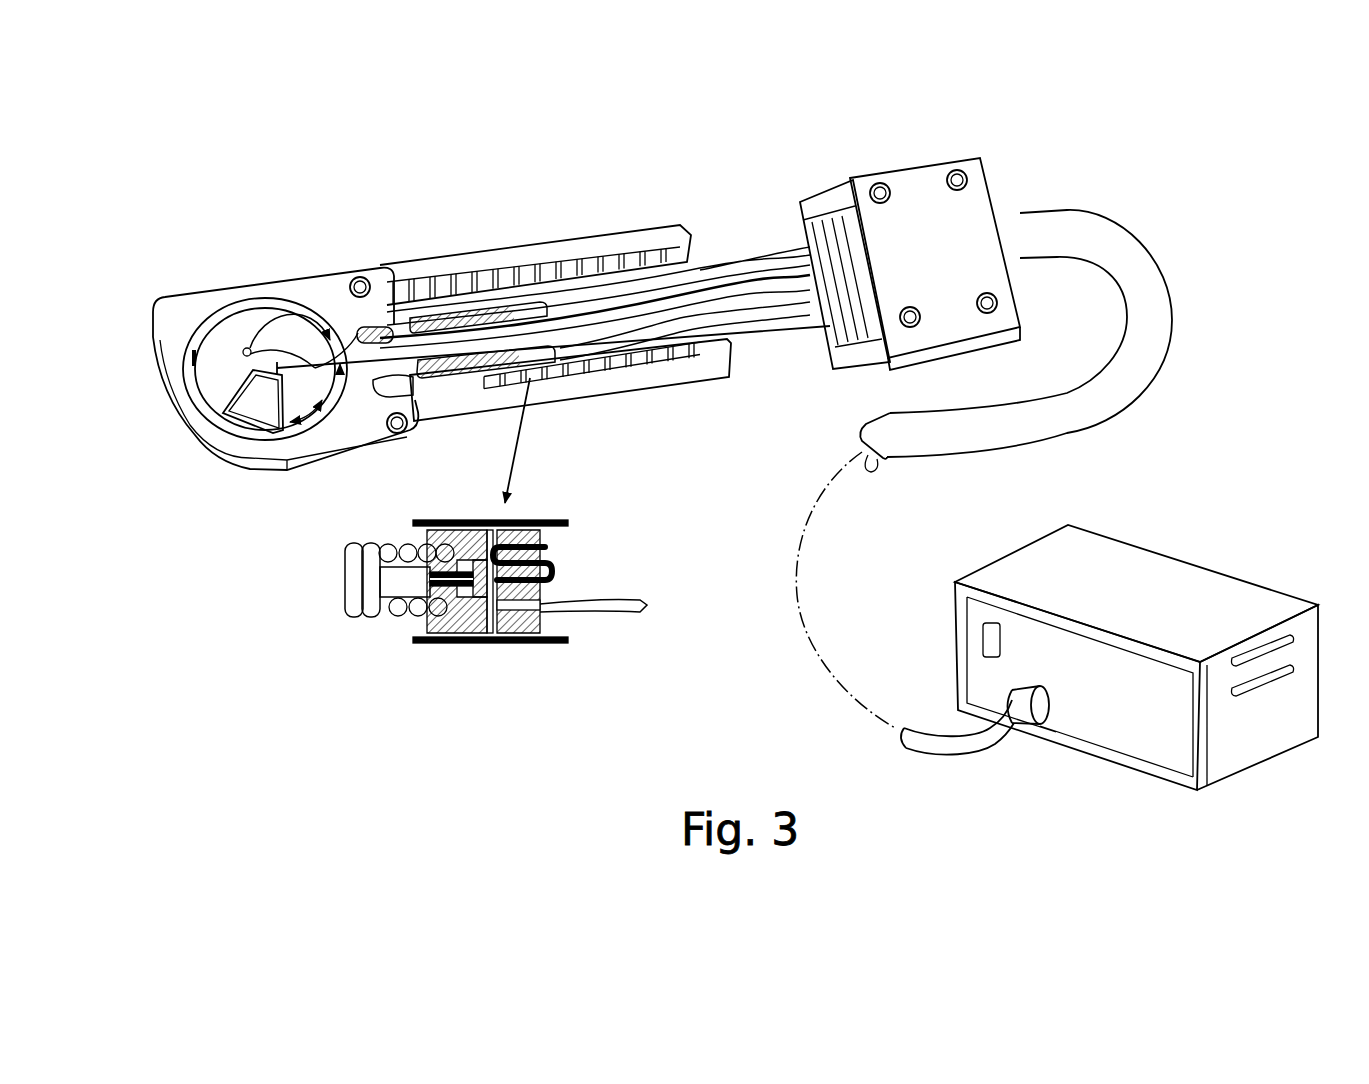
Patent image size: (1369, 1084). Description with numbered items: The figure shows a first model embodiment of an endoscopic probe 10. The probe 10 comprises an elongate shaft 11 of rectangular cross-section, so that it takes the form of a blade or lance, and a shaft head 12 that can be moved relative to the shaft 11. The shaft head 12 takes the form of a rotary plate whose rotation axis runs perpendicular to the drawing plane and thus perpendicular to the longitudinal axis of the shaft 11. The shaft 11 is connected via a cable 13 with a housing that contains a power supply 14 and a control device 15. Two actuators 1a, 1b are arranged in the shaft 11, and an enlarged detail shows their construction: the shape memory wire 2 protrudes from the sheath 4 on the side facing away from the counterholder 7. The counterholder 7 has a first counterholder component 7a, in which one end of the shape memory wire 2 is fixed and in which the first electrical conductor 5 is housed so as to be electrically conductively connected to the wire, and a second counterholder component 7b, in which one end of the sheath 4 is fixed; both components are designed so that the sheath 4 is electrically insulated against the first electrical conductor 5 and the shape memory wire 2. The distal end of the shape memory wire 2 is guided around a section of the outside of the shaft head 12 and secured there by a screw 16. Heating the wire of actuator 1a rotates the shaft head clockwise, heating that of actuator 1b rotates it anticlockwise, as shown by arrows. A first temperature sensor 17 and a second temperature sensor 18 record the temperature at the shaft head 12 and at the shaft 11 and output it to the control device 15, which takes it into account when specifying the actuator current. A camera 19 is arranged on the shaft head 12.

The endoscopic probe 10 is at (550, 336).
The elongate shaft 11 is at (550, 245).
The actuator 1a is at (455, 305).
The actuator 1b is at (488, 393).
The shaft head 12 is at (230, 322).
The screw 16 is at (183, 360).
The first temperature sensor 17 is at (249, 349).
The second temperature sensor 18 is at (412, 420).
The camera 19 is at (250, 432).
The cable 13 is at (1122, 250).
The power supply 14 is at (1077, 717).
The control device 15 is at (1145, 570).
The shape memory wire 2 is at (548, 563).
The sheath 4 is at (378, 603).
The first electrical conductor 5 is at (615, 607).
The counterholder 7 is at (496, 640).
The first counterholder component 7a is at (525, 643).
The second counterholder component 7b is at (440, 640).